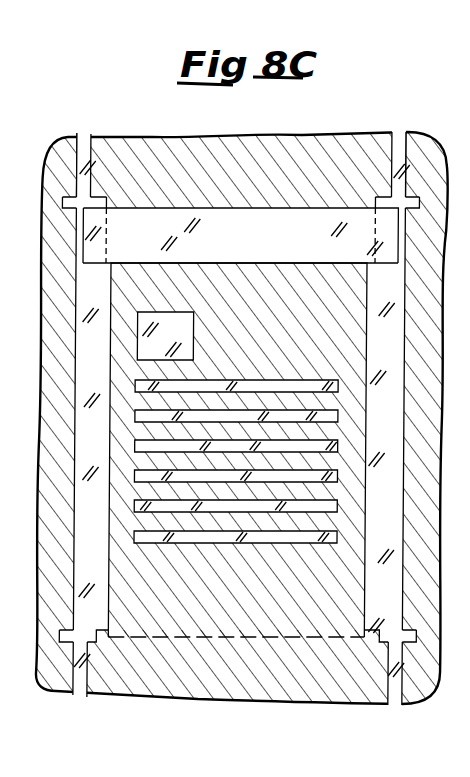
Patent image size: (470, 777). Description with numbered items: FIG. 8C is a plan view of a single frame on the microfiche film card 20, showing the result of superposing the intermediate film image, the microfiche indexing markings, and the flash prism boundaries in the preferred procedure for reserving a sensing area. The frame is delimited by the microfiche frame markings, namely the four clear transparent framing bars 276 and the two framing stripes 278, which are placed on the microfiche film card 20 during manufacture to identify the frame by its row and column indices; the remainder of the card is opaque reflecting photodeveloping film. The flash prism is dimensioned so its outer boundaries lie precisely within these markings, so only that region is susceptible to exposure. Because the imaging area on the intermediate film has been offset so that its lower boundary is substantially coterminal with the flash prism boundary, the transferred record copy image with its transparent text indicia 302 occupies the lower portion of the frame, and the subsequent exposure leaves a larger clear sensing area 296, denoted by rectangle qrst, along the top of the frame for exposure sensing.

The microfiche film card 20 is at (241, 166).
The framing bars 276 is at (103, 197).
The framing stripes 278 is at (93, 156).
The sensing area 296 is at (258, 237).
The transparent text indicia 302 is at (193, 330).